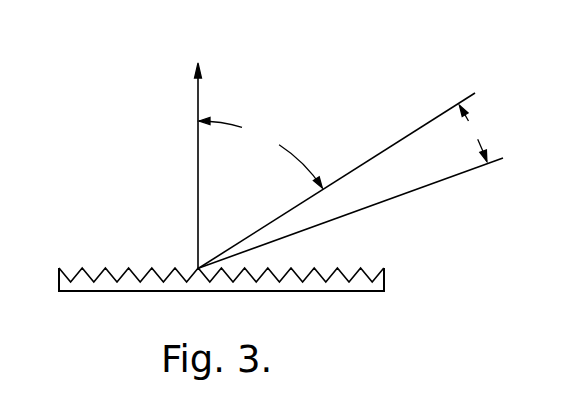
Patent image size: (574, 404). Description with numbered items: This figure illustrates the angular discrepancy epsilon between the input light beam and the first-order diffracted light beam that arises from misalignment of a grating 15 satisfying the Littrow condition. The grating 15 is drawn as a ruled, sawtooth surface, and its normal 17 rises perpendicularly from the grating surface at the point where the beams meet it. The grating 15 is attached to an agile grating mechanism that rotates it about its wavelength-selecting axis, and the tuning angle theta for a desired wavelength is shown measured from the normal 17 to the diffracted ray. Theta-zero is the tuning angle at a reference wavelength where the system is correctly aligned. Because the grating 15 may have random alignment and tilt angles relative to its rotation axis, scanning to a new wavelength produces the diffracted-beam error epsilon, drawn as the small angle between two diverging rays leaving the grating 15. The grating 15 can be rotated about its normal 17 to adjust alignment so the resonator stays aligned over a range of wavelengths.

The grating 15 is at (111, 271).
The normal 17 is at (211, 154).